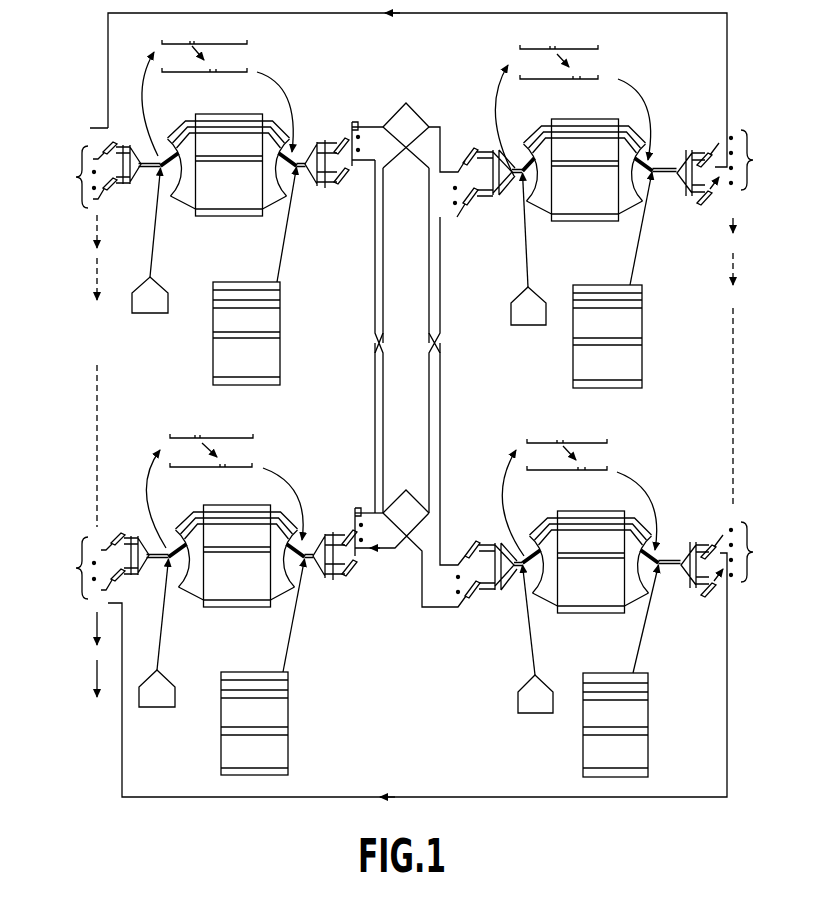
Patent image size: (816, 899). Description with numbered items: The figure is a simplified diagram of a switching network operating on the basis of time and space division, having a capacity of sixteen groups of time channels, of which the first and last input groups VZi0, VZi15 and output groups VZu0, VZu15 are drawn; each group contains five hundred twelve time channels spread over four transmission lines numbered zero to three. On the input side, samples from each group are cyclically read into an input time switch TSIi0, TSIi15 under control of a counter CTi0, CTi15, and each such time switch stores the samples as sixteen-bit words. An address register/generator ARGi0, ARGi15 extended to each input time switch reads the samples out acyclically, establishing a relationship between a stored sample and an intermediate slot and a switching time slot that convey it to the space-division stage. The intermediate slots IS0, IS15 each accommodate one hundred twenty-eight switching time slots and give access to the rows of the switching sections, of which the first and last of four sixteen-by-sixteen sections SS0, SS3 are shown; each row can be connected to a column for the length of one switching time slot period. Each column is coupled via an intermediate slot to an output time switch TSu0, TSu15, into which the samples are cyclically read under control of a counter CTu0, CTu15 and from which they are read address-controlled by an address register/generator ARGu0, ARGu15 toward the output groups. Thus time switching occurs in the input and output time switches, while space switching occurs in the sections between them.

The input time switch TSIi0 is at (188, 222).
The input time switch TSIi15 is at (215, 614).
The output time switch TSu0 is at (562, 228).
The output time switch TSu15 is at (567, 616).
The counter CTi0 is at (121, 312).
The counter CTi15 is at (134, 705).
The counter CTu0 is at (501, 323).
The counter CTu15 is at (507, 711).
The address register/generator ARGi0 is at (242, 390).
The address register/generator ARGi15 is at (255, 777).
The address register/generator ARGu0 is at (593, 391).
The address register/generator ARGu15 is at (607, 779).
The switching section SS0 is at (404, 121).
The switching section SS3 is at (405, 508).
The intermediate slot IS0 is at (347, 184).
The intermediate slot IS15 is at (358, 560).
The group of time channels VZi0 is at (93, 176).
The group of time channels VZi15 is at (95, 567).
The group of time channels VZu0 is at (730, 167).
The group of time channels VZu15 is at (735, 559).